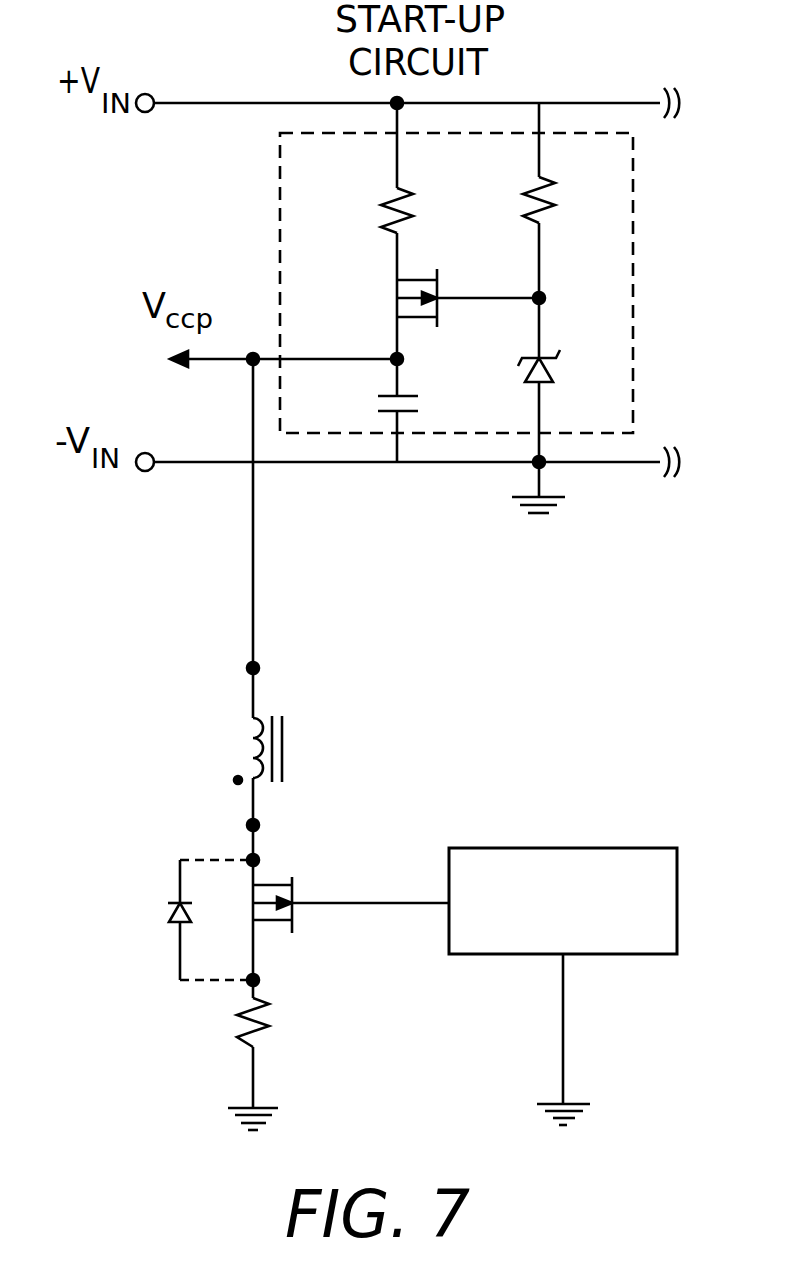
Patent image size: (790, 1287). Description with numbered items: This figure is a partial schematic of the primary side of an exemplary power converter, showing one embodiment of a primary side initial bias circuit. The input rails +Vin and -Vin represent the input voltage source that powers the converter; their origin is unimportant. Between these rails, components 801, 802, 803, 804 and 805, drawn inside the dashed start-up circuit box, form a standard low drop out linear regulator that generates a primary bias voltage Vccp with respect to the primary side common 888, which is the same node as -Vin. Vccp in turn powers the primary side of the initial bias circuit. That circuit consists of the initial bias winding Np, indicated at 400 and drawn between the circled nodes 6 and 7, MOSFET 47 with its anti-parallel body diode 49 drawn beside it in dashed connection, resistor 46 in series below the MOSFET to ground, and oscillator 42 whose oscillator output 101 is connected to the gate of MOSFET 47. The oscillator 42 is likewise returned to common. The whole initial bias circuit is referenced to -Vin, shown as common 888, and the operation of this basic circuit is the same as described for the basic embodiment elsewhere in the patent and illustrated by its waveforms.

The linear regulator component 801 is at (385, 216).
The linear regulator component 802 is at (400, 288).
The linear regulator component 803 is at (550, 196).
The linear regulator component 804 is at (552, 376).
The linear regulator component 805 is at (382, 403).
The primary side common 888 is at (535, 517).
The node 6 is at (222, 668).
The node 7 is at (222, 825).
The transformer primary winding 400 is at (284, 738).
The anti-parallel body diode 49 is at (170, 912).
The MOSFET 47 is at (294, 880).
The oscillator output 101 is at (407, 903).
The oscillator 42 is at (595, 848).
The resistor 46 is at (260, 1040).